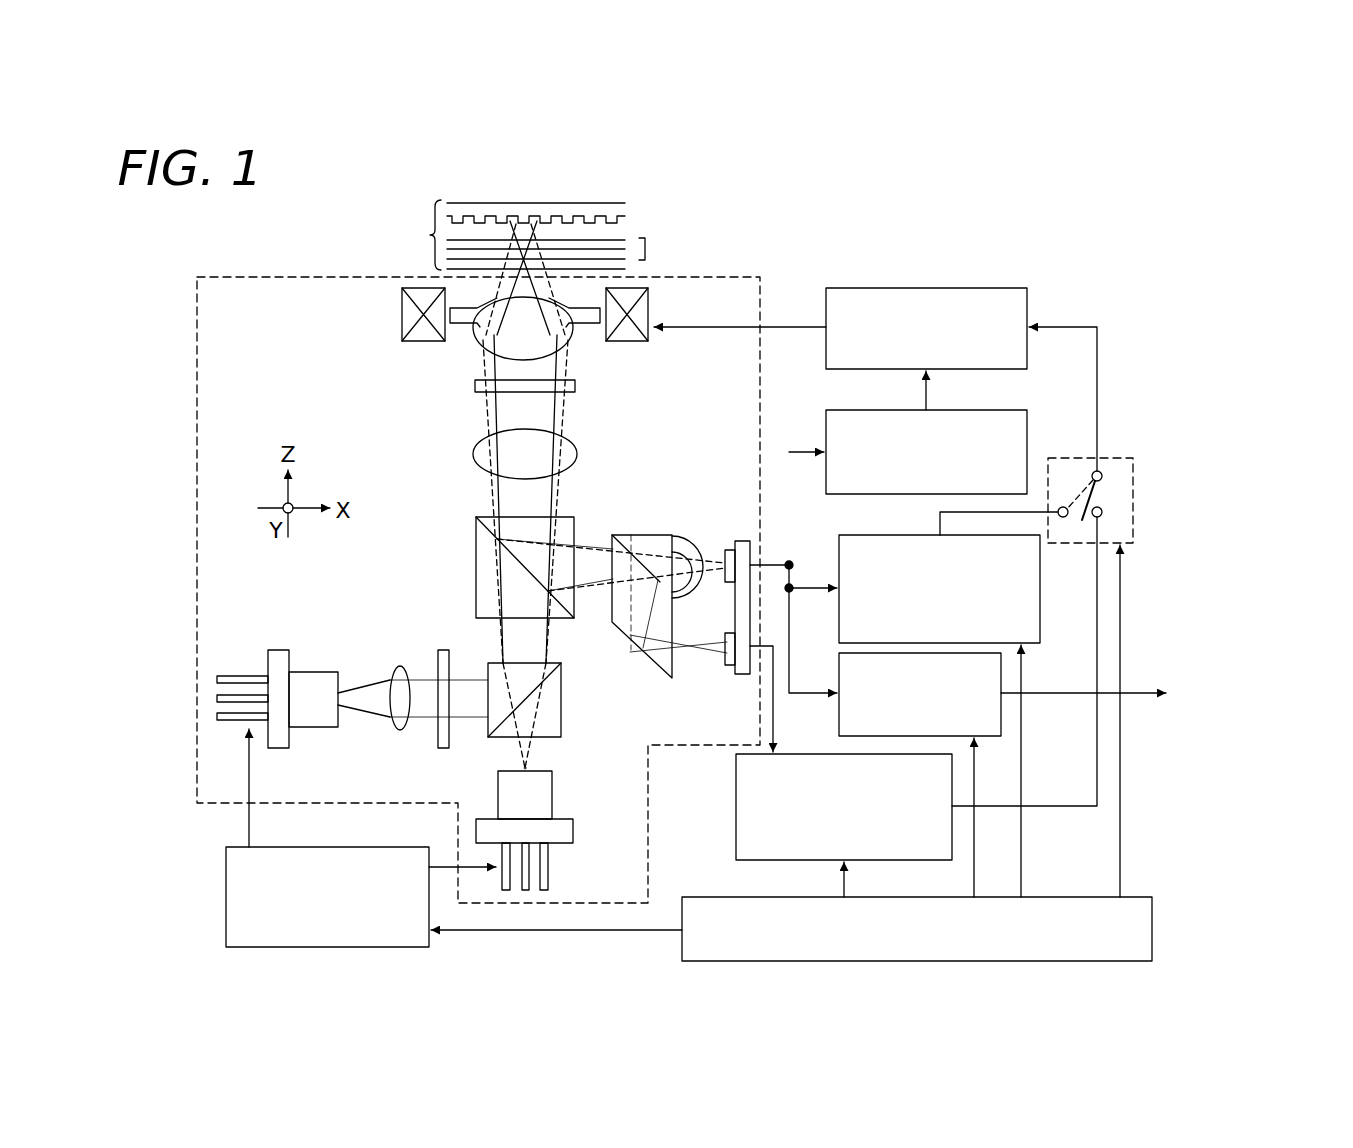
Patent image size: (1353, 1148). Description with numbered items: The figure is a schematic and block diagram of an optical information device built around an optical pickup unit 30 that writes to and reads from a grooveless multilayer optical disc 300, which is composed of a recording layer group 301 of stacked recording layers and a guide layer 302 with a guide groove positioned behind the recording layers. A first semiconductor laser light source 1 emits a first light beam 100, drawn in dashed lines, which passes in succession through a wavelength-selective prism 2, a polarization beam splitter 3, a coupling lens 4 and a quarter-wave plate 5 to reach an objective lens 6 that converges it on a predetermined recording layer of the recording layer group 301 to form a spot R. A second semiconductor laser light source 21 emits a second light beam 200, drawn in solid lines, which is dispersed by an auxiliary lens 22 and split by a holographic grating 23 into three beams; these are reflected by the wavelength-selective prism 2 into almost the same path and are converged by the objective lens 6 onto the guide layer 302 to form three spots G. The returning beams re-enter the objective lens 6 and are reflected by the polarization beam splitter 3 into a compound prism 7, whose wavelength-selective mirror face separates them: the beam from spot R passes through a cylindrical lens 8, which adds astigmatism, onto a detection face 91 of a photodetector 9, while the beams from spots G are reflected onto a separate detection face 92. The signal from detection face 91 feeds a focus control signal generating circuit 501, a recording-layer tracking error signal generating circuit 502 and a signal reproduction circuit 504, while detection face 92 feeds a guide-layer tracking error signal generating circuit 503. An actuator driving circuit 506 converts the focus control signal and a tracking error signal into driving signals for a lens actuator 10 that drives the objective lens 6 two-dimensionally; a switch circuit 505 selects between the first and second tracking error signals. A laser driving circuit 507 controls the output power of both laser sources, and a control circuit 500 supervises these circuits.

The first semiconductor laser light source 1 is at (553, 799).
The wavelength-selective prism 2 is at (562, 701).
The polarization beam splitter 3 is at (476, 553).
The coupling lens 4 is at (474, 461).
The quarter-wave plate 5 is at (475, 387).
The objective lens 6 is at (478, 332).
The compound prism 7 is at (650, 661).
The cylindrical lens 8 is at (683, 538).
The photodetector 9 is at (701, 606).
The lens actuator 10 is at (627, 343).
The second semiconductor laser light source 21 is at (318, 715).
The auxiliary lens 22 is at (397, 730).
The holographic grating 23 is at (444, 748).
The optical pickup unit 30 is at (250, 277).
The detection face 91 is at (728, 550).
The detection face 92 is at (725, 660).
The first light beam 100 is at (530, 769).
The second light beam 200 is at (364, 692).
The grooveless multilayer optical disc 300 is at (543, 230).
The recording layer group 301 is at (647, 250).
The guide layer 302 is at (628, 221).
The control circuit 500 is at (1153, 914).
The focus control signal generating circuit 501 is at (1000, 410).
The recording-layer tracking error signal generating circuit 502 is at (837, 565).
The guide-layer tracking error signal generating circuit 503 is at (736, 826).
The signal reproduction circuit 504 is at (838, 677).
The switch circuit 505 is at (1135, 498).
The actuator driving circuit 506 is at (940, 288).
The laser driving circuit 507 is at (226, 884).